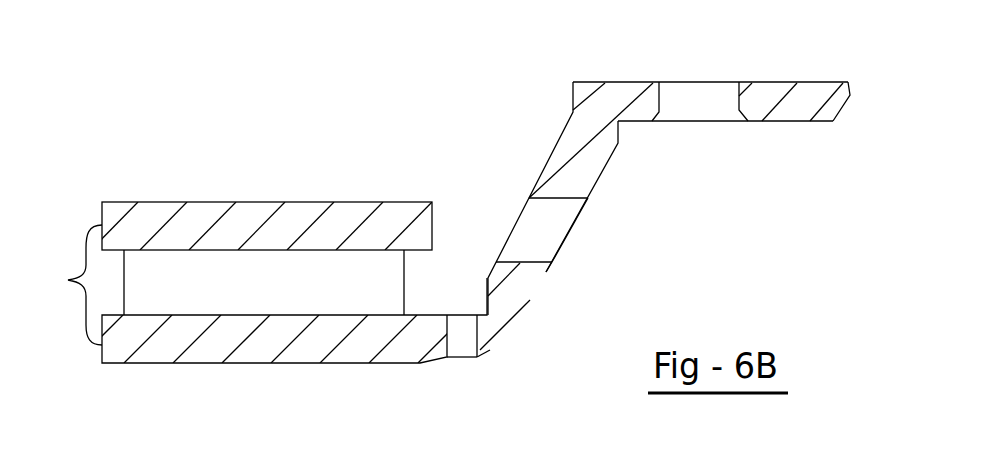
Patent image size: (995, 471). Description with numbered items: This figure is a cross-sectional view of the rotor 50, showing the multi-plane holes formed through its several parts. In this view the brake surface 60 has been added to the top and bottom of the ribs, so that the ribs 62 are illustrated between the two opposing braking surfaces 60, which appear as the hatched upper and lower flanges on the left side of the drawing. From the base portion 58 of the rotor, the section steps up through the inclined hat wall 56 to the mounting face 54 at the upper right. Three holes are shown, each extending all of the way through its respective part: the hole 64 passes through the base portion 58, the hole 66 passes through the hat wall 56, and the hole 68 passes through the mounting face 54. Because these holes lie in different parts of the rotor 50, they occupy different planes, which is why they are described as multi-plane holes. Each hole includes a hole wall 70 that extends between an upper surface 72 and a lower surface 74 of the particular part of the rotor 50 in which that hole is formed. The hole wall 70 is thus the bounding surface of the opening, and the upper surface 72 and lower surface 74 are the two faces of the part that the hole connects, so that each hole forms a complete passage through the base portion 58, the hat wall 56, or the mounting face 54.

The rotor 50 is at (420, 100).
The mounting face 54 is at (779, 90).
The hat wall 56 is at (603, 158).
The base portion 58 is at (481, 358).
The brake surface 60 is at (68, 285).
The ribs 62 is at (253, 283).
The hole 64 is at (458, 326).
The hole 66 is at (594, 268).
The hole 68 is at (680, 93).
The hole wall 70 is at (528, 233).
The upper surface 72 is at (526, 207).
The lower surface 74 is at (580, 210).